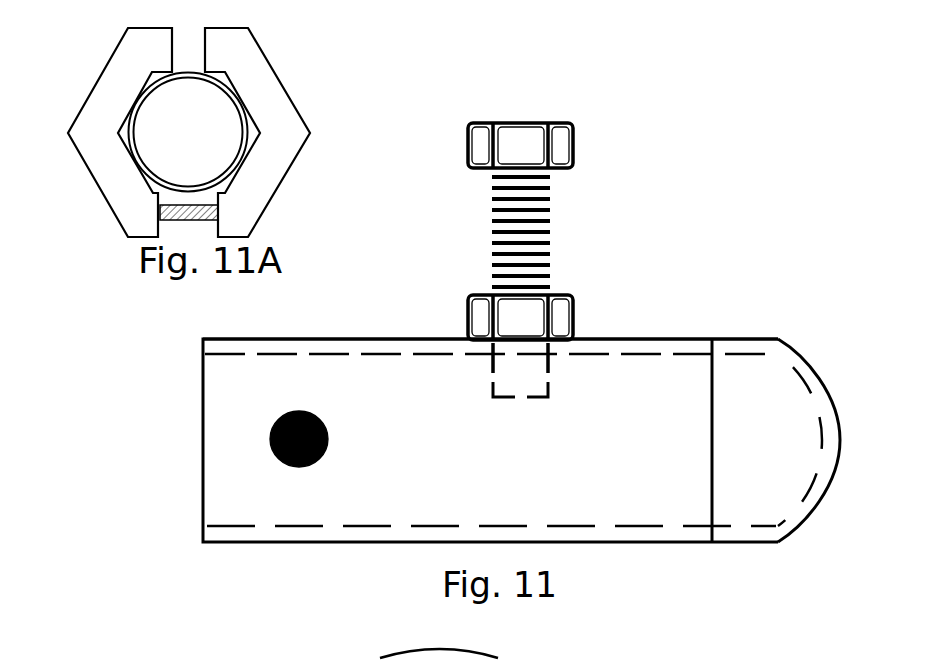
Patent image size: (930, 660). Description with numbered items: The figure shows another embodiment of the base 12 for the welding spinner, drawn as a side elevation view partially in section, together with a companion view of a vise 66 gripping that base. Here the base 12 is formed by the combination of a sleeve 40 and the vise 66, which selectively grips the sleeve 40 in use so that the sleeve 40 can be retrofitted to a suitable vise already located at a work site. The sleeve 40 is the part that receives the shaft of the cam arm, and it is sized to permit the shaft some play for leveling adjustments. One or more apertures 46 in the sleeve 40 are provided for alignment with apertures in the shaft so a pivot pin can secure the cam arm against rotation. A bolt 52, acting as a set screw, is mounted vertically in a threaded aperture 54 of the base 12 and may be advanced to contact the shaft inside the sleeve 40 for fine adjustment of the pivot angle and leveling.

In FIG. 11A, the base 12 is at (186, 72).
In FIG. 11, the base 12 is at (238, 338).
In FIG. 11A, the sleeve 40 is at (140, 114).
In FIG. 11, the sleeve 40 is at (405, 338).
In FIG. 11, the aperture 46 is at (267, 455).
In FIG. 11, the bolt 52 is at (550, 242).
In FIG. 11, the threaded aperture 54 is at (478, 345).
In FIG. 11A, the vise 66 is at (274, 72).